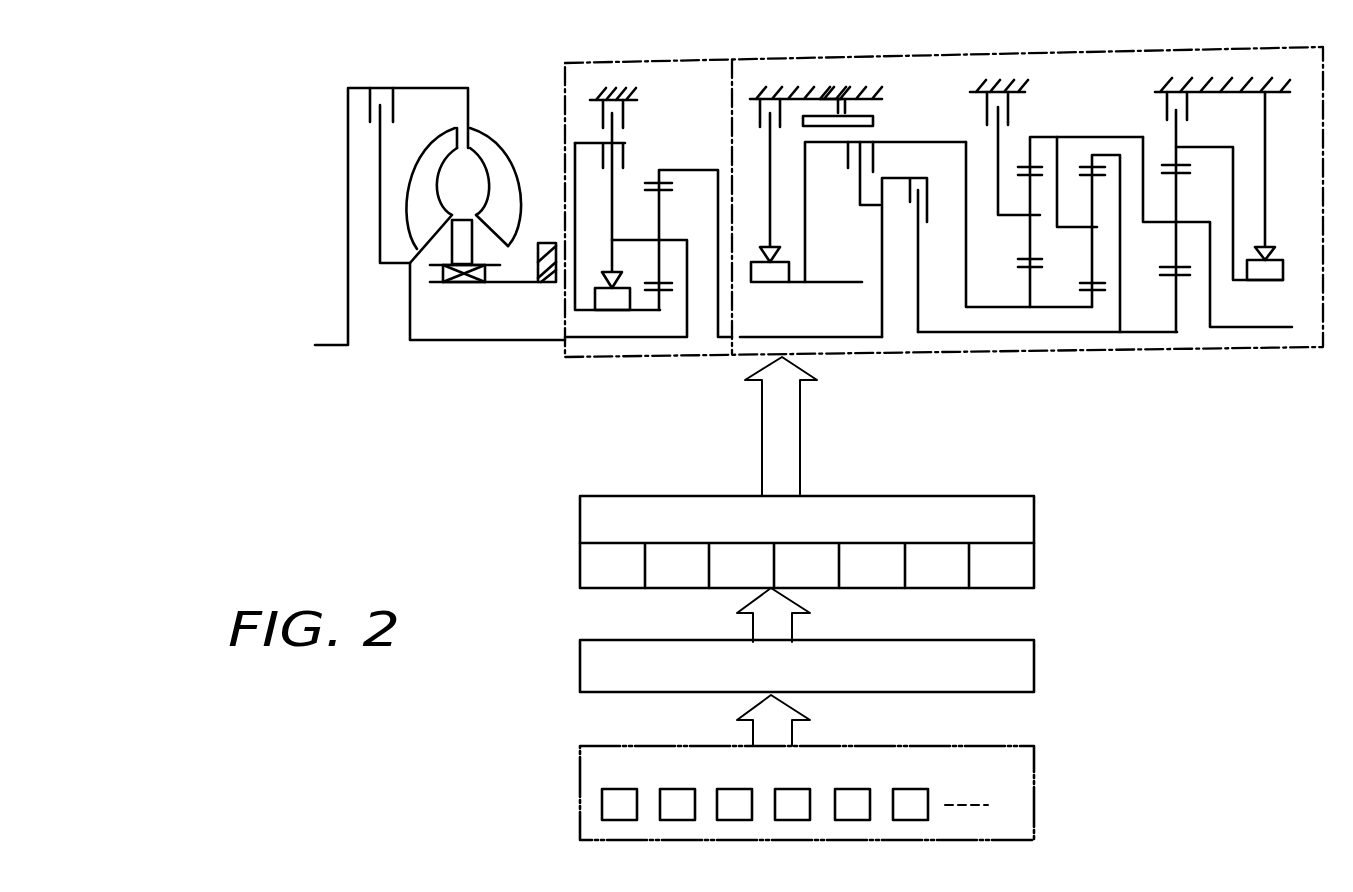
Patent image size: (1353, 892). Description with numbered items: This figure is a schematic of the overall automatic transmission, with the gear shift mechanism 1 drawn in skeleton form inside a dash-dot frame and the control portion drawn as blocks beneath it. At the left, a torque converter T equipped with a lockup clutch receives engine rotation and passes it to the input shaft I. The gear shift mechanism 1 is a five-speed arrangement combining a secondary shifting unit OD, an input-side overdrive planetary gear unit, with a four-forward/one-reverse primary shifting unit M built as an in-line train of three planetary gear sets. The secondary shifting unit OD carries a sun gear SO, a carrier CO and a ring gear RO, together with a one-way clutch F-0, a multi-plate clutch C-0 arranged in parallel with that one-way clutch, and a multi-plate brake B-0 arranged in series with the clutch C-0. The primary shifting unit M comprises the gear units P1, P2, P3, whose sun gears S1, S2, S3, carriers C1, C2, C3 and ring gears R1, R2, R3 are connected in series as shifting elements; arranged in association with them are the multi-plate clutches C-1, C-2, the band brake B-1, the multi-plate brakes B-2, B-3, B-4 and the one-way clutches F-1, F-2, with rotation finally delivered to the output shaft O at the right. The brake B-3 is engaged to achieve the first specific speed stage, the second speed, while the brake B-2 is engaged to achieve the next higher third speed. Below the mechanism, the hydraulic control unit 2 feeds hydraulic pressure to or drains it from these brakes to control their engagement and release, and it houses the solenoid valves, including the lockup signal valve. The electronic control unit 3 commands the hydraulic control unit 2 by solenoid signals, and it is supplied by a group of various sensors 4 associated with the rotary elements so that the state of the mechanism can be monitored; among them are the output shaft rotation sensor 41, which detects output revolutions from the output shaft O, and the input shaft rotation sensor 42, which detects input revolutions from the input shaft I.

The torque converter T is at (481, 90).
The input shaft I is at (470, 341).
The gear shift mechanism 1 is at (941, 53).
The primary shifting unit M is at (1100, 51).
The secondary shifting unit OD is at (692, 357).
The multi-plate brake B-0 is at (603, 118).
The band brake B-1 is at (866, 116).
The second frictional engagement element B-2 is at (760, 117).
The first frictional engagement element B-3 is at (984, 98).
The multi-plate brake B-4 is at (1173, 93).
The multi-plate clutch C-0 is at (590, 148).
The multi-plate clutch C-1 is at (928, 192).
The multi-plate clutch C-2 is at (852, 150).
The one-way clutch F-0 is at (598, 318).
The one-way clutch F-1 is at (775, 285).
The one-way clutch F-2 is at (1285, 268).
The ring gear RO is at (650, 182).
The carrier CO is at (676, 241).
The sun gear SO is at (663, 297).
The ring gear R1 is at (1034, 162).
The ring gear R2 is at (1090, 164).
The ring gear R3 is at (1166, 162).
The carrier C1 is at (1006, 218).
The carrier C2 is at (1077, 182).
The carrier C3 is at (1196, 234).
The sun gear S1 is at (1016, 268).
The sun gear S2 is at (1080, 283).
The sun gear S3 is at (1173, 278).
The gear unit P1 is at (1022, 316).
The gear unit P2 is at (1089, 318).
The gear unit P3 is at (1196, 334).
The output shaft O is at (1264, 328).
The hydraulic control unit 2 is at (1036, 518).
The electronic control unit 3 is at (1036, 661).
The various sensors 4 is at (1036, 771).
The output shaft rotation sensor 41 is at (625, 822).
The input shaft rotation sensor 42 is at (680, 822).